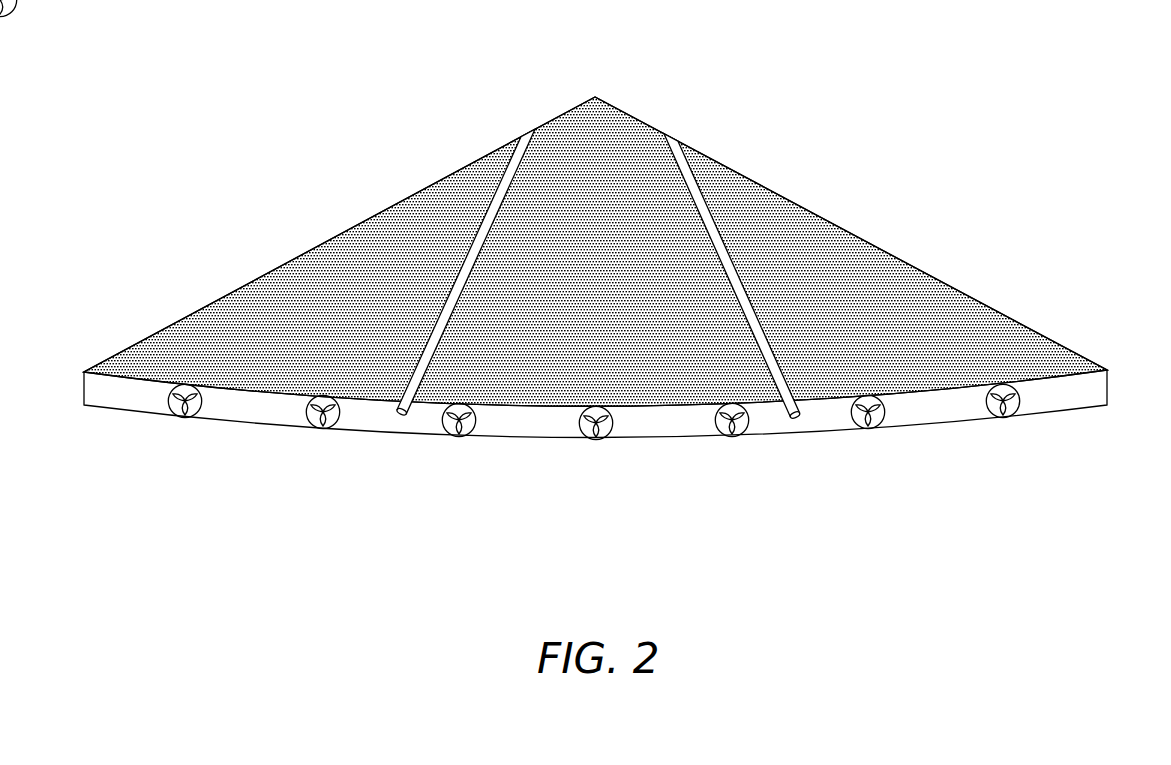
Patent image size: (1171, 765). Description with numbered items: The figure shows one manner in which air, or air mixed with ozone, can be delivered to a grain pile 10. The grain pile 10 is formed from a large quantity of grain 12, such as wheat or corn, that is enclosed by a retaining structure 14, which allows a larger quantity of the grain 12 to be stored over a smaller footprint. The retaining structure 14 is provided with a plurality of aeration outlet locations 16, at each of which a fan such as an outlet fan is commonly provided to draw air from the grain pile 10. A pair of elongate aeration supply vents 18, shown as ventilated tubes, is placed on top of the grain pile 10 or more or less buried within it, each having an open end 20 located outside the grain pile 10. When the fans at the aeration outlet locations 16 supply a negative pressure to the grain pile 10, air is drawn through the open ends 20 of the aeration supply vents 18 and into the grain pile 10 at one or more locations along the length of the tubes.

The grain pile 10 is at (574, 256).
The grain 12 is at (373, 252).
The retaining structure 14 is at (255, 417).
The aeration outlet location 16 is at (1010, 417).
The aeration supply vent 18 is at (507, 183).
The open end 20 is at (398, 416).